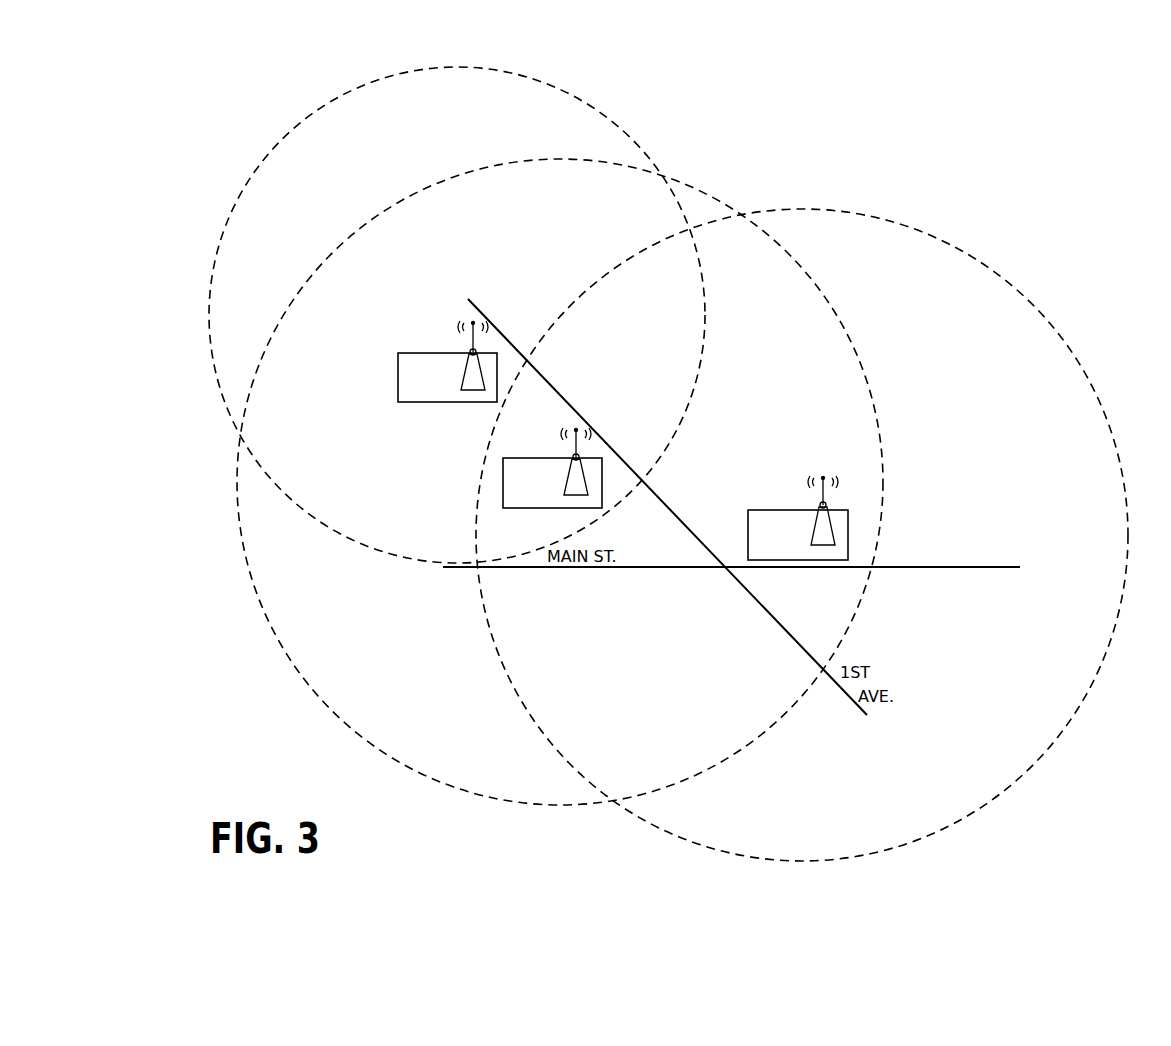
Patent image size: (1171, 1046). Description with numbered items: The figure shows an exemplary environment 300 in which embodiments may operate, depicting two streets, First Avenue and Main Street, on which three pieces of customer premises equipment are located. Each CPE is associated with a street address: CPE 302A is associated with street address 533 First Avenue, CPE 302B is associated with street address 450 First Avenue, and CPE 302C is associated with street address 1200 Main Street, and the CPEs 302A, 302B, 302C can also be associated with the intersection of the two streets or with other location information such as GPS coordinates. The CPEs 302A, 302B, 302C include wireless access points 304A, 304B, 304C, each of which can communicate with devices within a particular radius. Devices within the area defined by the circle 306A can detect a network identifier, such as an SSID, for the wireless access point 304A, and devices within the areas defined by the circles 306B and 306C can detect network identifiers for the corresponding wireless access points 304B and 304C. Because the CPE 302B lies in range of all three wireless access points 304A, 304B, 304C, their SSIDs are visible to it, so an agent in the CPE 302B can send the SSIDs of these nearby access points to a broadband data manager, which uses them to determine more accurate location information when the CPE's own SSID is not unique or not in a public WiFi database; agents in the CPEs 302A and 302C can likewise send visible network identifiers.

The environment 300 is at (901, 134).
The CPE 302A is at (515, 508).
The CPE 302B is at (397, 368).
The CPE 302C is at (762, 510).
The wireless access point 304A is at (567, 478).
The wireless access point 304B is at (475, 368).
The wireless access point 304C is at (814, 528).
The circle 306A is at (868, 370).
The circle 306B is at (622, 131).
The circle 306C is at (968, 256).
The street address 450 1st Ave. 450 is at (518, 297).
The street address 533 1st Ave. 533 is at (605, 384).
The street address 1200 Main St. 1200 is at (887, 533).